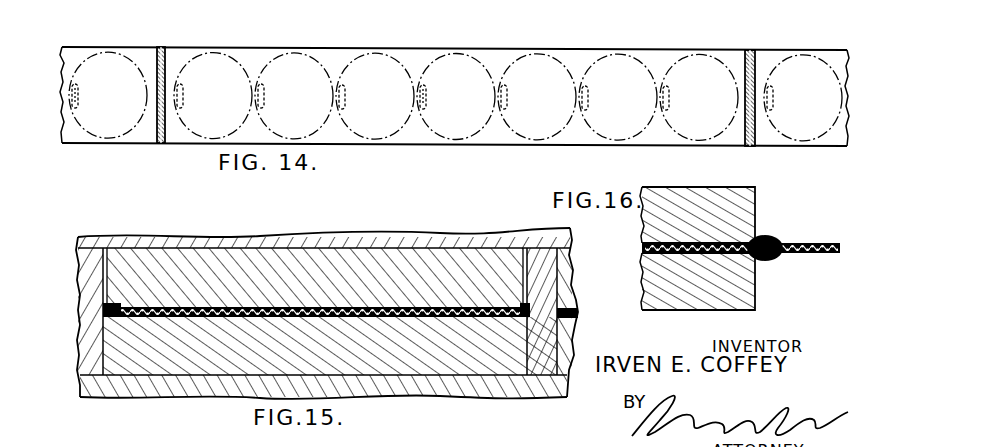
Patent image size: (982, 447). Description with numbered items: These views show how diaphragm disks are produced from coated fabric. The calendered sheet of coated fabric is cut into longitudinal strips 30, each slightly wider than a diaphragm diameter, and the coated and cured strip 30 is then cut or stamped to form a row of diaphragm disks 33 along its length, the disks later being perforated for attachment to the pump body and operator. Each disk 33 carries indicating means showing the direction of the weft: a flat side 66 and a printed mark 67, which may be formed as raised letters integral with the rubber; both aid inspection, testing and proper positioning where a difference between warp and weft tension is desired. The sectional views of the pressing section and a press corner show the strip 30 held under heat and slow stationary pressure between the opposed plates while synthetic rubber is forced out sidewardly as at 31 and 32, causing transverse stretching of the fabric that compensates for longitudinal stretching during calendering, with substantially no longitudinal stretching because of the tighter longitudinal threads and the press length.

In FIG. 14, the longitudinal strip 30 is at (410, 138).
In FIG. 15, the longitudinal strip 30 is at (183, 306).
In FIG. 16, the longitudinal strip 30 is at (688, 244).
In FIG. 15, the sidewardly forced synthetic rubber 31 is at (110, 300).
In FIG. 16, the exuded plastic material 32 is at (762, 238).
In FIG. 14, the diaphragm disk 33 is at (230, 78).
In FIG. 14, the flat side 66 is at (74, 89).
In FIG. 14, the printed mark 67 is at (79, 97).